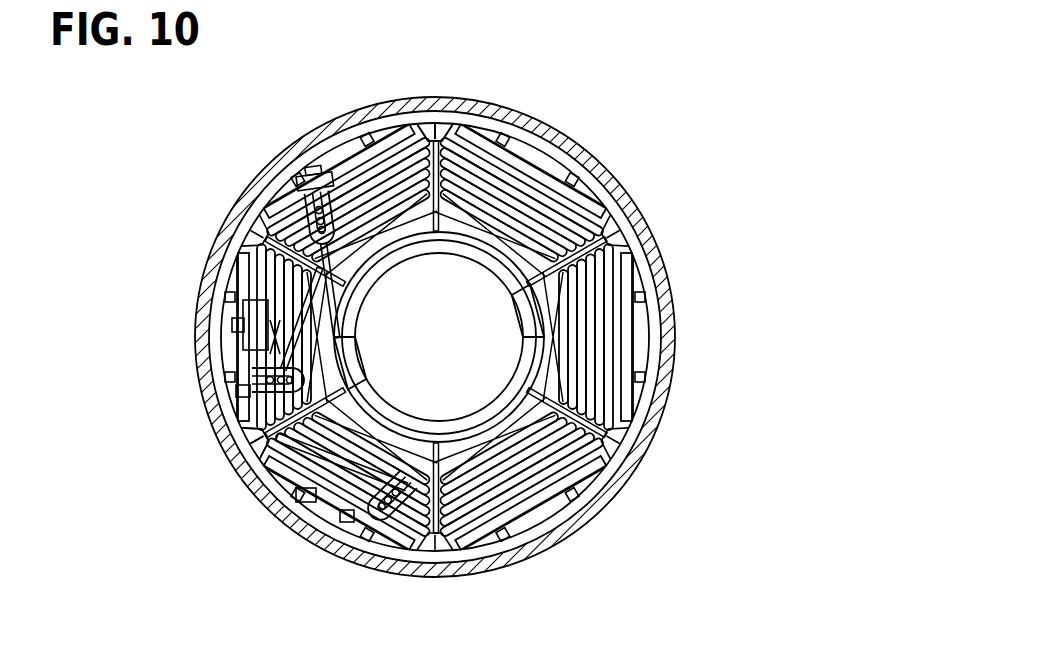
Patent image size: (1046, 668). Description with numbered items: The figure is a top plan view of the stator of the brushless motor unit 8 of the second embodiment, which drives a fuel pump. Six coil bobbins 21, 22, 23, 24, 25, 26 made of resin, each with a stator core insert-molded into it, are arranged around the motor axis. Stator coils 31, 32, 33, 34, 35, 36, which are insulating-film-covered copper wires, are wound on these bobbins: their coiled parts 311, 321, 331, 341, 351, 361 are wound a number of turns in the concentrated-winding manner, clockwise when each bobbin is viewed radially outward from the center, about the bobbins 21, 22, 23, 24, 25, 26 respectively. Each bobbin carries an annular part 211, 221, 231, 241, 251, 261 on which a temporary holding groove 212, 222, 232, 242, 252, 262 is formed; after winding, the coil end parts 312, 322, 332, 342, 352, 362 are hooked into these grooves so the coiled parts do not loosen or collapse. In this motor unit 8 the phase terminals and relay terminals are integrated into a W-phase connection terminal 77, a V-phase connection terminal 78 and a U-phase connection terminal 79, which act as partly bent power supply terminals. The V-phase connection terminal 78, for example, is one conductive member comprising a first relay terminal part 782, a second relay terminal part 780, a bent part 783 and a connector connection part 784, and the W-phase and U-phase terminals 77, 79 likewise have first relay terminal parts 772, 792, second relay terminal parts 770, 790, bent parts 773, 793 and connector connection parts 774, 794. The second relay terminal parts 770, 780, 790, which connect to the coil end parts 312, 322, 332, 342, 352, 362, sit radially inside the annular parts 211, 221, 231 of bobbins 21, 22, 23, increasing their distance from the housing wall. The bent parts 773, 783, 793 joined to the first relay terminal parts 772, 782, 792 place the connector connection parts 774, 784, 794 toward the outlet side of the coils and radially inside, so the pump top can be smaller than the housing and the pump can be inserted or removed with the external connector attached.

The motor unit 8 is at (523, 345).
The coil bobbin 21 is at (307, 515).
The annular part 211 is at (410, 535).
The temporary holding groove 212 is at (369, 537).
The coil bobbin 22 is at (193, 315).
The annular part 221 is at (245, 421).
The temporary holding groove 222 is at (230, 297).
The coil bobbin 23 is at (336, 129).
The annular part 231 is at (267, 215).
The temporary holding groove 232 is at (296, 182).
The coil bobbin 24 is at (534, 138).
The annular part 241 is at (460, 131).
The temporary holding groove 242 is at (504, 138).
The coil bobbin 25 is at (680, 337).
The annular part 251 is at (628, 305).
The temporary holding groove 252 is at (642, 290).
The coil bobbin 26 is at (534, 527).
The annular part 261 is at (528, 507).
The temporary holding groove 262 is at (574, 497).
The stator coil 31 is at (289, 468).
The coiled part 311 is at (270, 463).
The coil end part 312 is at (295, 500).
The stator coil 32 is at (230, 331).
The coiled part 321 is at (243, 303).
The coil end part 322 is at (243, 318).
The stator coil 33 is at (359, 164).
The coiled part 331 is at (338, 160).
The coil end part 332 is at (406, 138).
The stator coil 34 is at (510, 183).
The coiled part 341 is at (603, 178).
The coil end part 342 is at (250, 441).
The stator coil 35 is at (643, 337).
The coiled part 351 is at (622, 372).
The coil end part 352 is at (255, 245).
The stator coil 36 is at (510, 500).
The coiled part 361 is at (563, 455).
The coil end part 362 is at (446, 562).
The W-phase connection terminal 77 is at (368, 505).
The second relay terminal part 770 is at (398, 490).
The first relay terminal part 772 is at (345, 522).
The bent part 773 is at (306, 503).
The connector connection part 774 is at (380, 514).
The V-phase connection terminal 78 is at (219, 364).
The second relay terminal part 780 is at (283, 372).
The first relay terminal part 782 is at (255, 376).
The bent part 783 is at (236, 390).
The connector connection part 784 is at (232, 325).
The U-phase connection terminal 79 is at (318, 195).
The second relay terminal part 790 is at (324, 248).
The first relay terminal part 792 is at (302, 172).
The bent part 793 is at (312, 162).
The connector connection part 794 is at (315, 200).